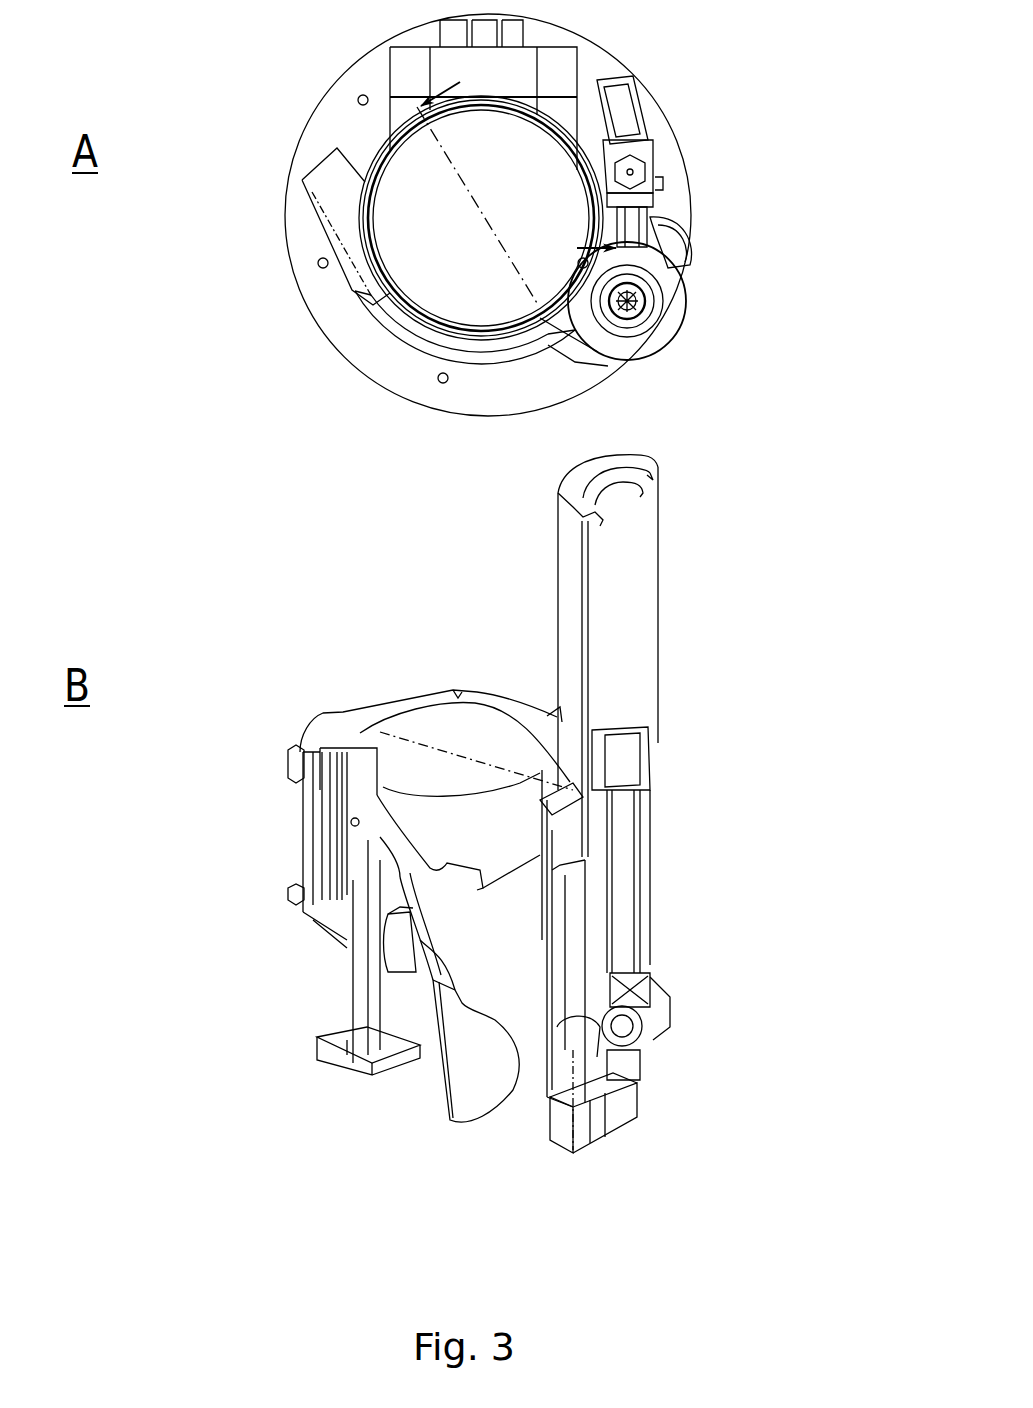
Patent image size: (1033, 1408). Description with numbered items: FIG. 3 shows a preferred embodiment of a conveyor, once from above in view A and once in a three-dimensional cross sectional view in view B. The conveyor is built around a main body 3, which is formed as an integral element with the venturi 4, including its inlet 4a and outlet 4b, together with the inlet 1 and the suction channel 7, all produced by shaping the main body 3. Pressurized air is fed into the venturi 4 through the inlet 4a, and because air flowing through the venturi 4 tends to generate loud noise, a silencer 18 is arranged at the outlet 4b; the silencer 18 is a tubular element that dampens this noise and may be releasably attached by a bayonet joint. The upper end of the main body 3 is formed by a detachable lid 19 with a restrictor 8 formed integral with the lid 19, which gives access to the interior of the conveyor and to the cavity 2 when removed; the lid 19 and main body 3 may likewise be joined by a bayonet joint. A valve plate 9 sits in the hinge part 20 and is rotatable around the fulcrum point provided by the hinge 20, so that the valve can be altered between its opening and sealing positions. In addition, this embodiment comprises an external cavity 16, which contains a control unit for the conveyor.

The inlet 1 is at (331, 178).
The cavity 2 is at (495, 934).
The main body 3 is at (305, 985).
The venturi 4 is at (630, 1022).
The inlet of the venturi 4a is at (638, 1051).
The outlet of the venturi 4b is at (617, 801).
The suction channel 7 is at (574, 941).
The restrictor 8 is at (414, 806).
The valve plate 9 is at (434, 1096).
The external cavity 16 is at (423, 57).
The silencer 18 is at (665, 311).
The lid 19 is at (450, 222).
The hinge 20 is at (406, 958).